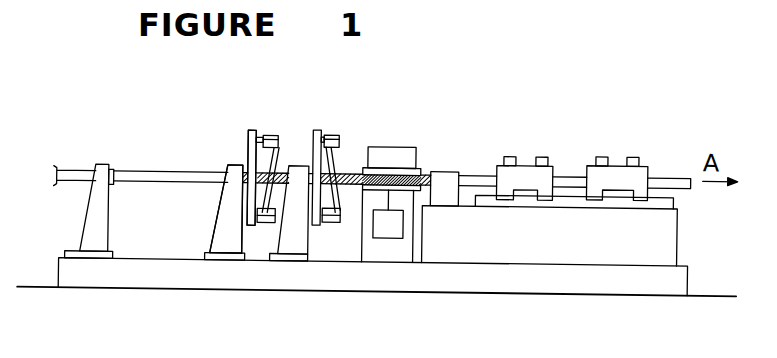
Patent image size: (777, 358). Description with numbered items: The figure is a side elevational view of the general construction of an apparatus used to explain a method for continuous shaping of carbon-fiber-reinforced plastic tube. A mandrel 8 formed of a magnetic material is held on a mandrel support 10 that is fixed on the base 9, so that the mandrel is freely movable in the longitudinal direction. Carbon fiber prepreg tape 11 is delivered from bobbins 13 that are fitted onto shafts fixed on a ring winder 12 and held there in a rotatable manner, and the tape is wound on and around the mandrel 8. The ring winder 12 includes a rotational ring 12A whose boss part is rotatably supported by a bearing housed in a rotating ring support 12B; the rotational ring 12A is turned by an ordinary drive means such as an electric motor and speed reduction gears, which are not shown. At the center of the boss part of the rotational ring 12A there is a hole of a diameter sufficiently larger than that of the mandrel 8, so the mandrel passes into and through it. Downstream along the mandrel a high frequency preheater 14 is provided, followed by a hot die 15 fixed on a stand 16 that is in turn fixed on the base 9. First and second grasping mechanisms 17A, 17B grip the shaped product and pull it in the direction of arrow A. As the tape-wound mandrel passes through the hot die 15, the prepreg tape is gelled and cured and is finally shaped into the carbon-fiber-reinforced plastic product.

The mandrel 8 is at (172, 173).
The base 9 is at (163, 278).
The mandrel support 10 is at (103, 166).
The carbon fiber prepreg tape 11 is at (342, 147).
The ring winder 12 is at (252, 132).
The rotational ring 12A is at (250, 228).
The rotating ring support 12B is at (225, 232).
The bobbins 13 is at (273, 135).
The high frequency preheater 14 is at (392, 146).
The hot die 15 is at (445, 170).
The stand 16 is at (660, 235).
The first grasping mechanism 17A is at (528, 163).
The second grasping mechanism 17B is at (617, 162).